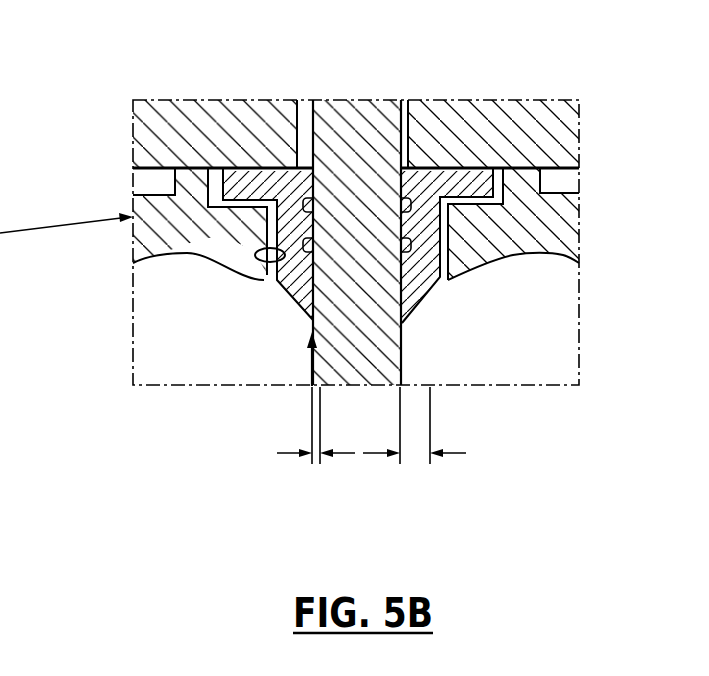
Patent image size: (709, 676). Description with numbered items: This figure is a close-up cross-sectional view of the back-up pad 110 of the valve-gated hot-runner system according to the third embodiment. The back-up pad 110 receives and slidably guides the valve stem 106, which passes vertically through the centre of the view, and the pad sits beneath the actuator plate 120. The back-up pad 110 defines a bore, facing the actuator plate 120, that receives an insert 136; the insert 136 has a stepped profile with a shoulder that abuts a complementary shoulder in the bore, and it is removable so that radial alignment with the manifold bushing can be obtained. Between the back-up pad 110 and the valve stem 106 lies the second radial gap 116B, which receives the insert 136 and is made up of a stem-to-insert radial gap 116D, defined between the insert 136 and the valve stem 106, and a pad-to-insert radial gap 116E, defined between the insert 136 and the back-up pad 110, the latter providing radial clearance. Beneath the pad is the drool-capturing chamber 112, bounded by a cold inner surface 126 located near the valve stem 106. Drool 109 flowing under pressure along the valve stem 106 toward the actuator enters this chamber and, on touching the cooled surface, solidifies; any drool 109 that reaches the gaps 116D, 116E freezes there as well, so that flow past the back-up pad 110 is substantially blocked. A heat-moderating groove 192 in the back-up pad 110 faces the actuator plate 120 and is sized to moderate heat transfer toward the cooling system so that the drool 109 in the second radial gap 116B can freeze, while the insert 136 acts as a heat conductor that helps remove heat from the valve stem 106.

The valve stem 106 is at (386, 151).
The drool 109 is at (312, 373).
The back-up pad 110 is at (559, 240).
The drool-capturing chamber 112 is at (242, 355).
The second radial gap 116B is at (418, 458).
The stem-to-insert radial gap 116D is at (313, 467).
The pad-to-insert radial gap 116E is at (262, 254).
The actuator plate 120 is at (242, 150).
The cold inner surface 126 is at (224, 246).
The insert 136 is at (258, 182).
The heat-moderating groove 192 is at (573, 182).